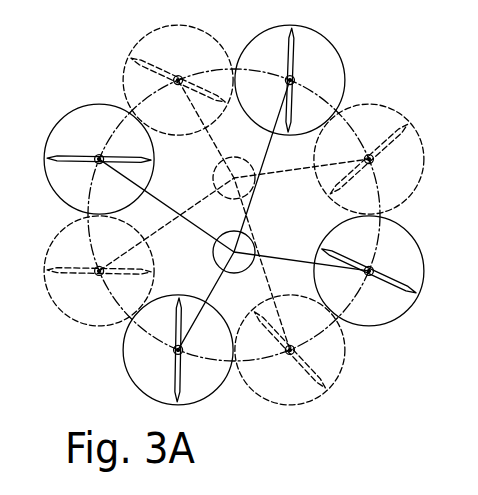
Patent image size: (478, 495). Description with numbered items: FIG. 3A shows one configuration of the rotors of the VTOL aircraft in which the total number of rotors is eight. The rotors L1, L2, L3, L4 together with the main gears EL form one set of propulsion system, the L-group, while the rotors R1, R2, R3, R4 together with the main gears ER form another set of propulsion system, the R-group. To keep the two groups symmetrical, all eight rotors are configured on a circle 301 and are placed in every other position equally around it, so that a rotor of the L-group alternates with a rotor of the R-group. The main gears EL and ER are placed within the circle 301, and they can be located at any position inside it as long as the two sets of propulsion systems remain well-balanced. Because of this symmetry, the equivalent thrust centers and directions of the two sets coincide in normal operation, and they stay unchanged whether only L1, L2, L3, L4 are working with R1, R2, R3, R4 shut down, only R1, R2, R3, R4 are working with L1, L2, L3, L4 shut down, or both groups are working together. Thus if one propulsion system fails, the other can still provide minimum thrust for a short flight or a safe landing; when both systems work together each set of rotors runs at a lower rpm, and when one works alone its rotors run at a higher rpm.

The circle 301 is at (273, 231).
The rotor L1 is at (99, 159).
The rotor L2 is at (290, 80).
The rotor L3 is at (369, 271).
The rotor L4 is at (178, 350).
The rotor R1 is at (178, 80).
The rotor R2 is at (369, 159).
The rotor R3 is at (290, 350).
The rotor R4 is at (99, 271).
The main gears ER is at (212, 175).
The main gears EL is at (212, 255).